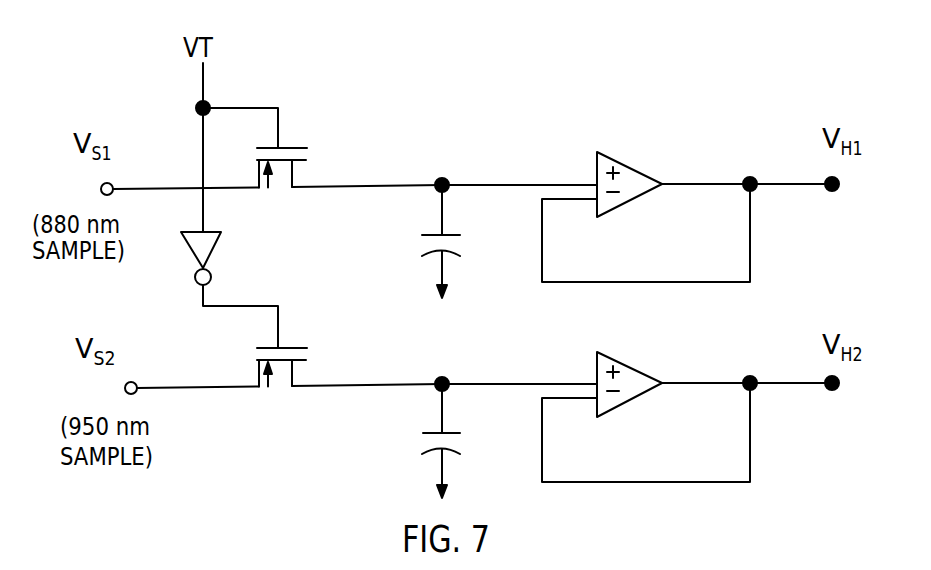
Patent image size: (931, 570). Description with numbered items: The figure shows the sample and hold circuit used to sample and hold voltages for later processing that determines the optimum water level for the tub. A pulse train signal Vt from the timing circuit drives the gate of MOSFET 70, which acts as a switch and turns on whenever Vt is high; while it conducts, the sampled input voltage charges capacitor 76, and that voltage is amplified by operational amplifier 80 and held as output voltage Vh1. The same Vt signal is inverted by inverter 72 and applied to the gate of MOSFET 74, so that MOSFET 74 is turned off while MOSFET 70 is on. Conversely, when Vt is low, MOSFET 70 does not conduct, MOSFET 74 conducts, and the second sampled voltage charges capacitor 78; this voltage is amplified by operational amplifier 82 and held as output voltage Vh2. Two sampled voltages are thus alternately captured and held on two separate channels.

The MOSFET 70 is at (282, 143).
The inverter 72 is at (197, 246).
The MOSFET 74 is at (288, 340).
The capacitor 76 is at (428, 226).
The capacitor 78 is at (430, 423).
The operational amplifier 80 is at (638, 180).
The operational amplifier 82 is at (638, 378).